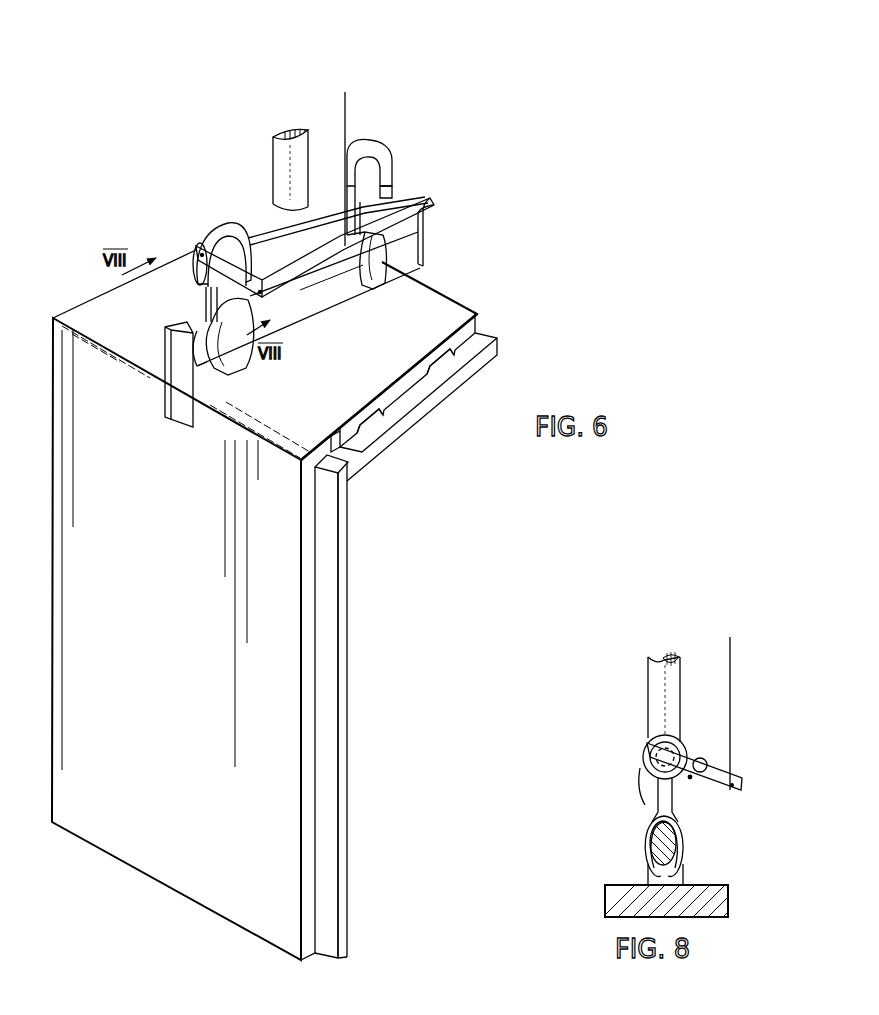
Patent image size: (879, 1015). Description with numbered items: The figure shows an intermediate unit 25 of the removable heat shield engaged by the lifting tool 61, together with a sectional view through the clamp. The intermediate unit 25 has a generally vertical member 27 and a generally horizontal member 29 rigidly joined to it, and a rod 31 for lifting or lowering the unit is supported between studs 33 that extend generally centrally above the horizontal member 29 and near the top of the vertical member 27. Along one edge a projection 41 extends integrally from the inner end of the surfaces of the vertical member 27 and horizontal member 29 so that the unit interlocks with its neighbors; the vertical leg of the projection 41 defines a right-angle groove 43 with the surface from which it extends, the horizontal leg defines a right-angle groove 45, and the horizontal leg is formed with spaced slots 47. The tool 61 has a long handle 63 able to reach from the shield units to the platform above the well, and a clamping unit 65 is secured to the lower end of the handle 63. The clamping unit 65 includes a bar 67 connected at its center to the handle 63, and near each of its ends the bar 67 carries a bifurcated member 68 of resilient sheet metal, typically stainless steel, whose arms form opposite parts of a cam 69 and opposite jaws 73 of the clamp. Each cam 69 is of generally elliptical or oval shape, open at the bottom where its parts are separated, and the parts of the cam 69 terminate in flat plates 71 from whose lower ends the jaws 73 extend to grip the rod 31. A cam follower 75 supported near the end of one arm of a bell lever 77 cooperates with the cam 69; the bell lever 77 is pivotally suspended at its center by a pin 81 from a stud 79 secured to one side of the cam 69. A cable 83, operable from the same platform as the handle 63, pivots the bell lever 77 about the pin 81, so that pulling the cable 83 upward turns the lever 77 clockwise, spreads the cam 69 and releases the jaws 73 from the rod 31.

In FIG. 6, the intermediate unit 25 is at (480, 314).
In FIG. 6, the vertical member 27 is at (123, 812).
In FIG. 6, the horizontal member 29 is at (397, 392).
In FIG. 8, the horizontal member 29 is at (607, 885).
In FIG. 6, the rod 31 is at (312, 285).
In FIG. 8, the rod 31 is at (660, 841).
In FIG. 6, the stud 33 is at (183, 387).
In FIG. 8, the stud 33 is at (683, 878).
In FIG. 6, the projection 41 is at (350, 483).
In FIG. 6, the right-angle groove 43 is at (315, 718).
In FIG. 6, the right-angle groove 45 is at (335, 410).
In FIG. 6, the slot 47 is at (438, 362).
In FIG. 6, the tool 61 is at (268, 164).
In FIG. 8, the tool 61 is at (635, 764).
In FIG. 6, the handle 63 is at (295, 135).
In FIG. 8, the handle 63 is at (660, 683).
In FIG. 6, the clamping unit 65 is at (385, 150).
In FIG. 8, the clamping unit 65 is at (694, 752).
In FIG. 6, the bar 67 is at (325, 185).
In FIG. 8, the bar 67 is at (665, 781).
In FIG. 6, the bifurcated member 68 is at (398, 172).
In FIG. 8, the bifurcated member 68 is at (638, 774).
In FIG. 6, the cam 69 is at (240, 237).
In FIG. 8, the cam 69 is at (644, 772).
In FIG. 6, the flat plate 71 is at (388, 230).
In FIG. 6, the jaw 73 is at (240, 370).
In FIG. 8, the jaw 73 is at (650, 869).
In FIG. 6, the cam follower 75 is at (215, 245).
In FIG. 8, the cam follower 75 is at (645, 746).
In FIG. 6, the bell lever 77 is at (222, 285).
In FIG. 8, the bell lever 77 is at (727, 797).
In FIG. 6, the stud 79 is at (232, 235).
In FIG. 8, the stud 79 is at (692, 781).
In FIG. 6, the pin 81 is at (200, 285).
In FIG. 8, the pin 81 is at (688, 793).
In FIG. 6, the cable 83 is at (347, 103).
In FIG. 8, the cable 83 is at (730, 640).